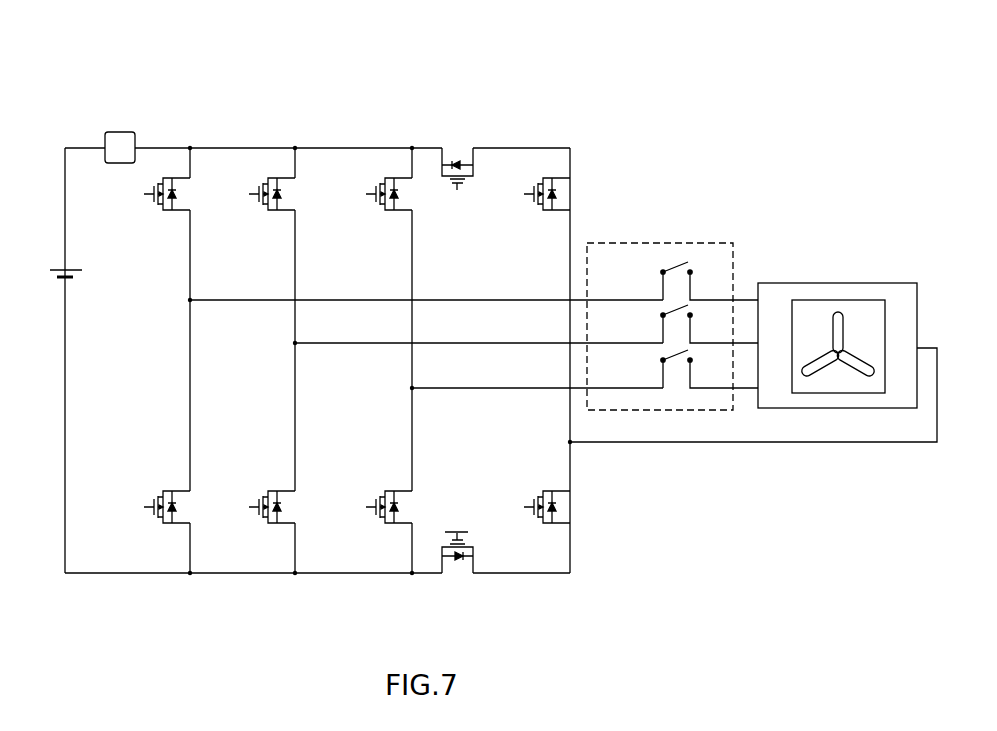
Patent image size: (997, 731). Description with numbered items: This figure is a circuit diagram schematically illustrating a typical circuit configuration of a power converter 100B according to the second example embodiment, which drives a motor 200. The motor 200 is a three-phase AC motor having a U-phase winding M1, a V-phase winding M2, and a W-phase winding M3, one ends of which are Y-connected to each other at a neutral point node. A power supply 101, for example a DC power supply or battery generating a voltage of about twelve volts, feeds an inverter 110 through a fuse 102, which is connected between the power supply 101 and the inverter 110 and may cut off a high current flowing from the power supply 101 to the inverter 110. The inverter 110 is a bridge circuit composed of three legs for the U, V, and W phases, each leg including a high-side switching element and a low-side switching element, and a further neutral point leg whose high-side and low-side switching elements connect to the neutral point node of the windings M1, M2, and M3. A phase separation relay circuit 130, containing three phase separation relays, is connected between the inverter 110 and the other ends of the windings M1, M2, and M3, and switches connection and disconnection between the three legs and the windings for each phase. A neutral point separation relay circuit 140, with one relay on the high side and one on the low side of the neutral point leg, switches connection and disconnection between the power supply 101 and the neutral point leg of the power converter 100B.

The power converter 100B is at (665, 152).
The power supply 101 is at (57, 279).
The fuse 102 is at (118, 132).
The inverter 110 is at (312, 133).
The phase separation relay circuit 130 is at (688, 234).
The neutral point separation relay circuit 140 is at (466, 141).
The motor 200 is at (752, 356).
The U-phase winding M1 is at (843, 328).
The V-phase winding M2 is at (818, 373).
The W-phase winding M3 is at (860, 376).